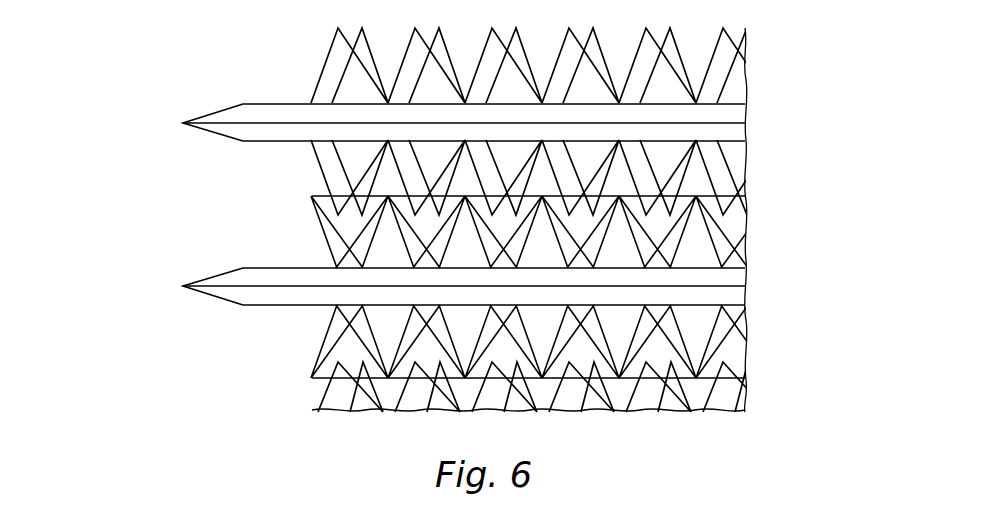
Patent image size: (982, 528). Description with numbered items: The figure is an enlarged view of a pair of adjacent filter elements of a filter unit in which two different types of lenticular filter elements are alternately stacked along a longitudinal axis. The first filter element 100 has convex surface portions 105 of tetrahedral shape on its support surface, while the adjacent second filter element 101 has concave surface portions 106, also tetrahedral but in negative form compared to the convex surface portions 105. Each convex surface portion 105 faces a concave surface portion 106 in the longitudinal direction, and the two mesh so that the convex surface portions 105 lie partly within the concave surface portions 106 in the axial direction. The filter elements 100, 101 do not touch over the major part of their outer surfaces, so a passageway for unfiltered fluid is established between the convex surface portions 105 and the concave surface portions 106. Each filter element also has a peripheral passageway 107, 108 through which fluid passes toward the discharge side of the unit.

The first filter element 100 is at (183, 123).
The second filter element 101 is at (183, 286).
The convex surface portion 105 is at (317, 163).
The concave surface portion 106 is at (330, 228).
The peripheral passageway 107 is at (733, 117).
The peripheral passageway 108 is at (737, 283).